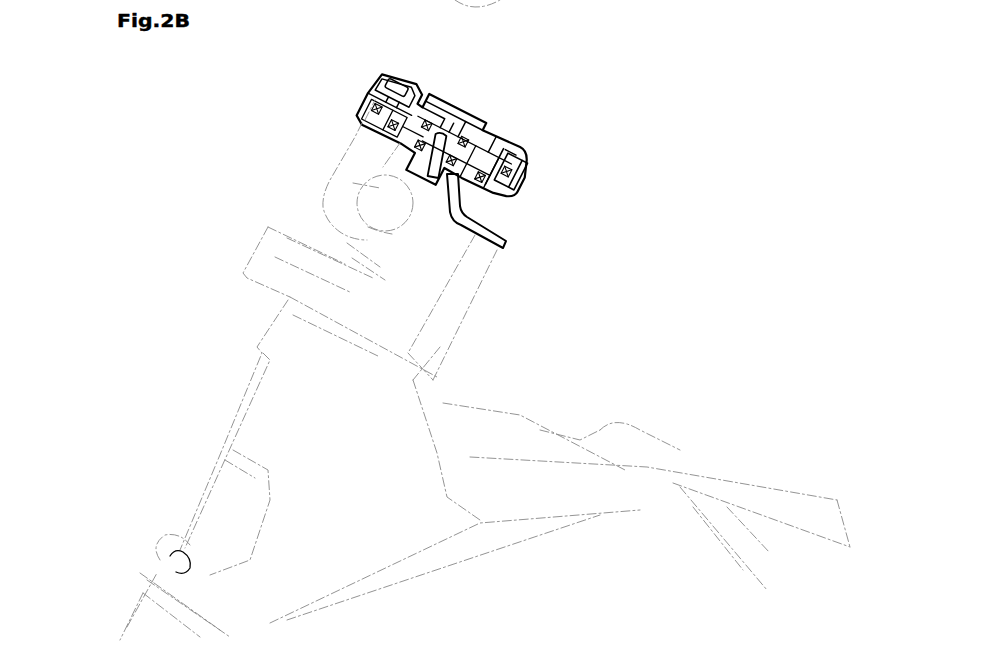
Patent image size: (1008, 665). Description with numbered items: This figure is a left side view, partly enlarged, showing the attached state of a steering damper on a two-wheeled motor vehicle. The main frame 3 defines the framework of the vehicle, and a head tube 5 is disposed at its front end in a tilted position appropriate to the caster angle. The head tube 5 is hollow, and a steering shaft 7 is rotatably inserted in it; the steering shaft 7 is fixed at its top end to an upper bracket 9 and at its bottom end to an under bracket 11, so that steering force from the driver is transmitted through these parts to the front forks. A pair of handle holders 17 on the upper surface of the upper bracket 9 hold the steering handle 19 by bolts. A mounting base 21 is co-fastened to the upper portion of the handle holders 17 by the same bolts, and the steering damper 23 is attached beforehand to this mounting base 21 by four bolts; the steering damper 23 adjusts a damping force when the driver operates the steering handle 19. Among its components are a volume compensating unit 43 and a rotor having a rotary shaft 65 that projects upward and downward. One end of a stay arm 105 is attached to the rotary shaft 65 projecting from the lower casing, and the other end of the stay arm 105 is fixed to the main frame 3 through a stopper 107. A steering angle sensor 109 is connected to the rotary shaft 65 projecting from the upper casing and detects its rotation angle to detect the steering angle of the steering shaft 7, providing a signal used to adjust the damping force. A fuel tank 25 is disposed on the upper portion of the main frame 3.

The main frame 3 is at (434, 450).
The head tube 5 is at (253, 403).
The steering shaft 7 is at (368, 227).
The upper bracket 9 is at (247, 249).
The under bracket 11 is at (132, 593).
The handle holders 17 is at (328, 200).
The steering handle 19 is at (382, 185).
The mounting base 21 is at (350, 119).
The steering damper 23 is at (522, 150).
The fuel tank 25 is at (623, 505).
The volume compensating unit 43 is at (418, 72).
The rotary shaft 65 is at (455, 122).
The stay arm 105 is at (507, 243).
The stopper 107 is at (480, 290).
The steering angle sensor 109 is at (464, 106).